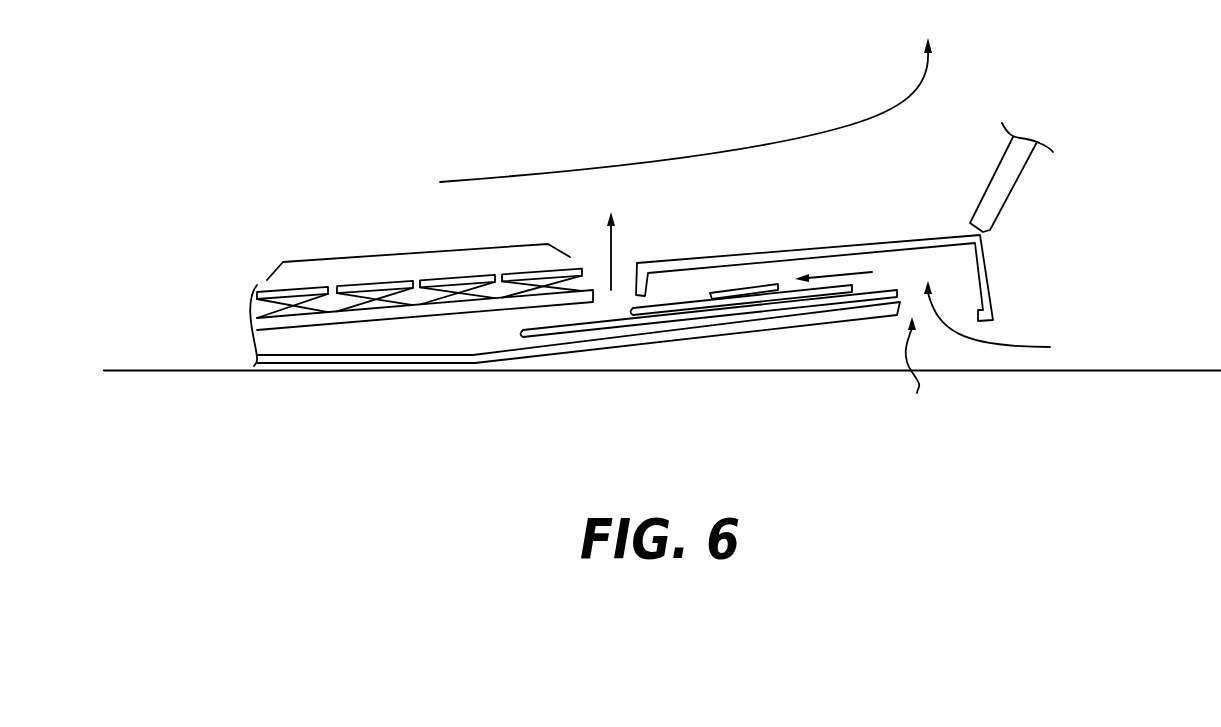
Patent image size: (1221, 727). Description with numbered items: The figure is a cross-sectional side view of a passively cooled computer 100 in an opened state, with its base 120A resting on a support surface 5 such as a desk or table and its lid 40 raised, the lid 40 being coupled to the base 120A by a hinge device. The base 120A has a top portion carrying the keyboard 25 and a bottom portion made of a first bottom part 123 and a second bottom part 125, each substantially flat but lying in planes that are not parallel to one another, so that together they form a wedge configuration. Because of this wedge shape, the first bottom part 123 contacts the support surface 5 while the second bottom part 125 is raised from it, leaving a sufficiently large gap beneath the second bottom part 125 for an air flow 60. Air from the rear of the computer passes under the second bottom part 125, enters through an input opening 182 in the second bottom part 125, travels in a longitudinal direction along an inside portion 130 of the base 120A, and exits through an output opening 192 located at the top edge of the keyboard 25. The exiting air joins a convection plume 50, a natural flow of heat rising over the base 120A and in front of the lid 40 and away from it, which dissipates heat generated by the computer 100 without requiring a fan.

The support surface 5 is at (160, 372).
The computer 100 is at (352, 178).
The keyboard 25 is at (410, 250).
The output opening 192 is at (583, 253).
The inside portion 130 is at (693, 287).
The base 120A is at (704, 252).
The convection plume 50 is at (908, 102).
The lid 40 is at (1013, 195).
The first bottom part 123 is at (377, 357).
The second bottom part 125 is at (672, 340).
The input opening 182 is at (907, 369).
The air flow 60 is at (997, 347).